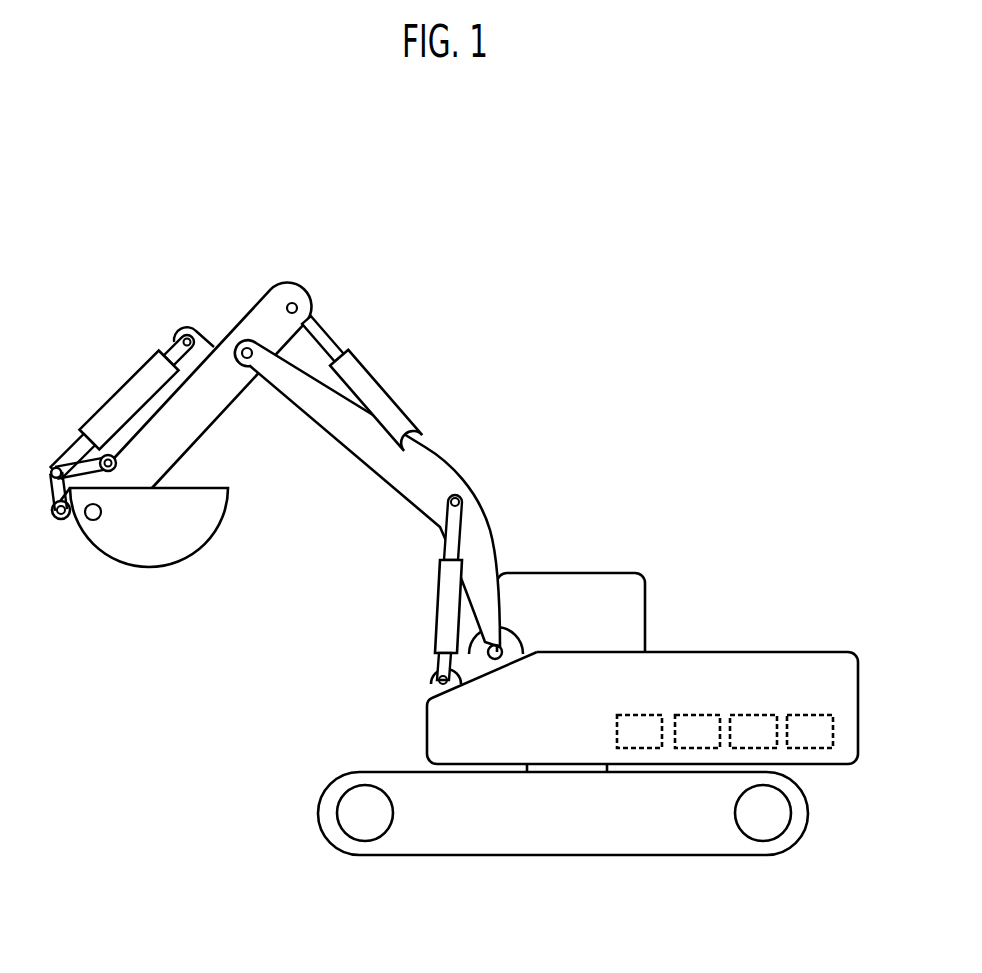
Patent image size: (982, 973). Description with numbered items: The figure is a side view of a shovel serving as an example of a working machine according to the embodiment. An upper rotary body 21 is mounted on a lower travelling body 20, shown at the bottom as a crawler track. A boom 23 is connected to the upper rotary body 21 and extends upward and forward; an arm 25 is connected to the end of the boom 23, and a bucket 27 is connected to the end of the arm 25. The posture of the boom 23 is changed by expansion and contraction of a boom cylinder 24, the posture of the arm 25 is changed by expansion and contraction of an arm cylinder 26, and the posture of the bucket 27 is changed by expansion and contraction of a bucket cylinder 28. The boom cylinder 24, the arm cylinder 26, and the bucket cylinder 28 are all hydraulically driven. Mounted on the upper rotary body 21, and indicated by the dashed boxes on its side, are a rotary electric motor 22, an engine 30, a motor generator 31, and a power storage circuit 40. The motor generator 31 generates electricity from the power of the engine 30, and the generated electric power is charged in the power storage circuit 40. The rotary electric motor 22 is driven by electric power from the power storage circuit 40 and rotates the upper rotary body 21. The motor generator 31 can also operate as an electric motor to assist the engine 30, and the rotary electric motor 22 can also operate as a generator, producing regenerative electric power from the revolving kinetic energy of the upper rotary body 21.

The lower travelling body 20 is at (703, 857).
The upper rotary body 21 is at (423, 732).
The rotary electric motor 22 is at (642, 715).
The boom 23 is at (388, 480).
The boom cylinder 24 is at (433, 627).
The arm 25 is at (245, 314).
The arm cylinder 26 is at (395, 400).
The bucket 27 is at (110, 563).
The bucket cylinder 28 is at (133, 398).
The engine 30 is at (793, 715).
The motor generator 31 is at (763, 715).
The power storage circuit 40 is at (712, 715).